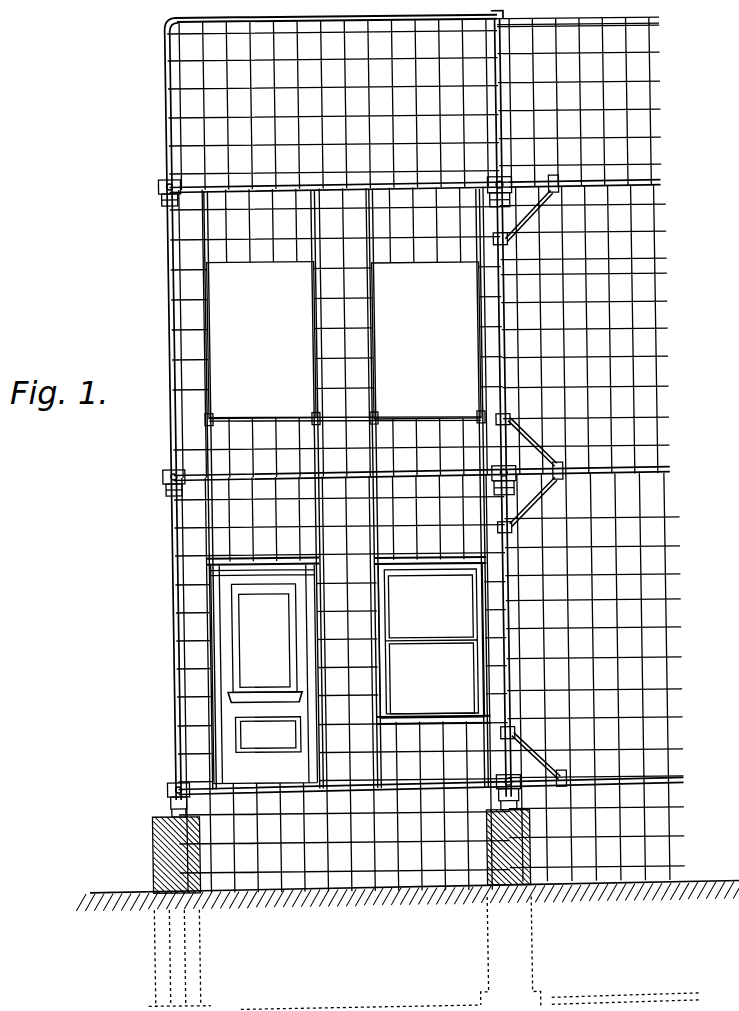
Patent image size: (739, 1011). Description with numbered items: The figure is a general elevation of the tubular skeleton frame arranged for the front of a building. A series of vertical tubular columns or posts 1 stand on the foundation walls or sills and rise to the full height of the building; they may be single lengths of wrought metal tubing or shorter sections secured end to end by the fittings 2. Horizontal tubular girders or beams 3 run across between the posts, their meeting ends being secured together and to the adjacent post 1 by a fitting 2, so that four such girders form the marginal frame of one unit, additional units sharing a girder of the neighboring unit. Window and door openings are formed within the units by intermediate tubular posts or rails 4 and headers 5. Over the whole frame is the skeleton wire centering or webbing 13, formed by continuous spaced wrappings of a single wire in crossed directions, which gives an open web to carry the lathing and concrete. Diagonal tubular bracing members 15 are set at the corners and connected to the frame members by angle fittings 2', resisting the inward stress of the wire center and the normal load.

The tubular columns or posts 1 is at (165, 294).
The fittings 2 is at (318, 496).
The angle fittings 2' is at (571, 479).
The horizontal tubular girders or beams 3 is at (338, 187).
The intermediate tubular posts or rails 4 is at (376, 337).
The headers 5 is at (434, 567).
The skeleton wire centering or webbing 13 is at (661, 331).
The tubular bracing members 15 is at (535, 215).